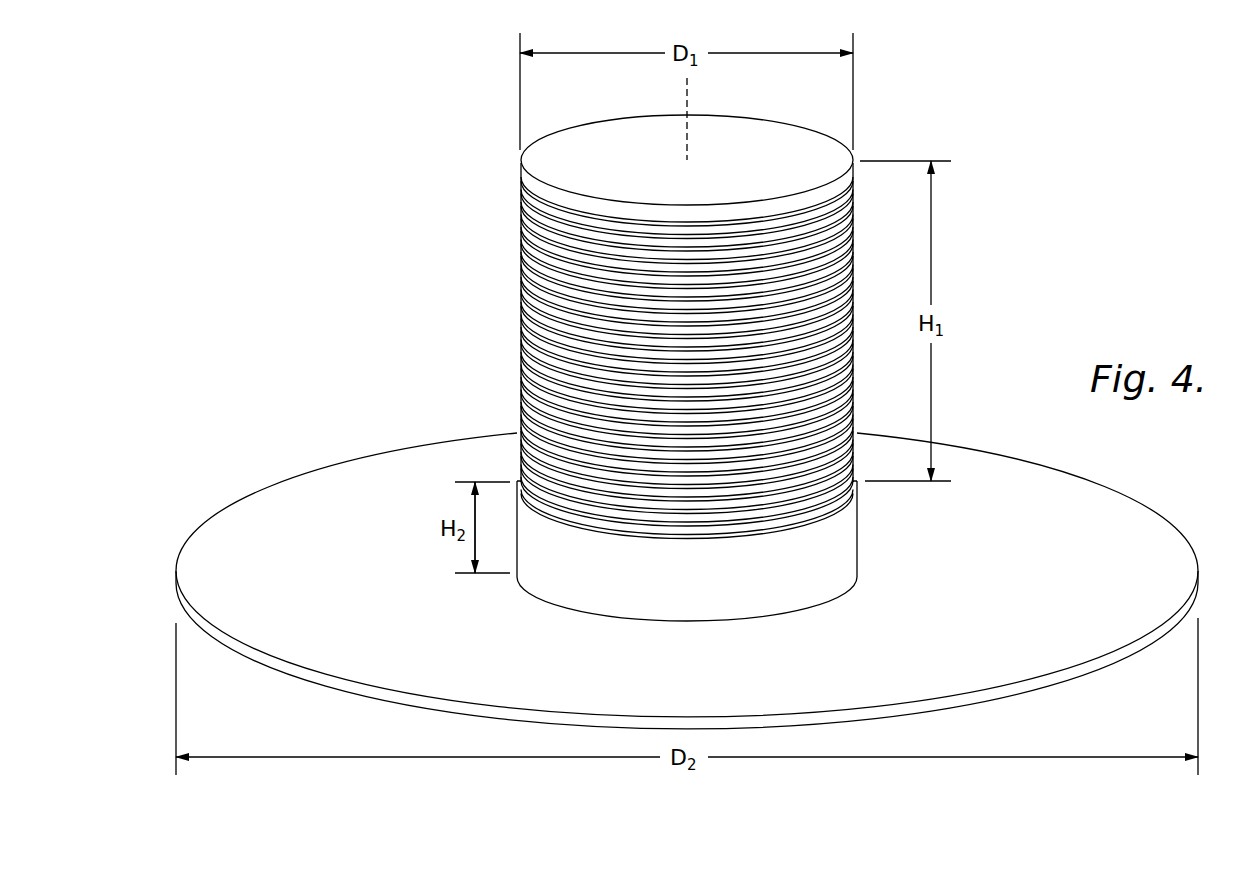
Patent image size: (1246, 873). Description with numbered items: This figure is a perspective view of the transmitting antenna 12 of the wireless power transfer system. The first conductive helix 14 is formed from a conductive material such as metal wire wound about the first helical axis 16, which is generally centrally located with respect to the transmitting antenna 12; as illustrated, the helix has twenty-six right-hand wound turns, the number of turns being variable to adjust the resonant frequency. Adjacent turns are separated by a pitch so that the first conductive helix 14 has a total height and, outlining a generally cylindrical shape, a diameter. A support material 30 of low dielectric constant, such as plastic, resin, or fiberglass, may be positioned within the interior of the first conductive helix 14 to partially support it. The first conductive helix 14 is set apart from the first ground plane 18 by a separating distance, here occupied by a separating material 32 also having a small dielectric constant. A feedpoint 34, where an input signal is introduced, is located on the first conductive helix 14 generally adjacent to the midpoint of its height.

The transmitting antenna 12 is at (428, 190).
The first conductive helix 14 is at (520, 277).
The first helical axis 16 is at (687, 101).
The first ground plane 18 is at (1153, 527).
The support material 30 is at (792, 160).
The separating material 32 is at (784, 572).
The feedpoint 34 is at (518, 330).